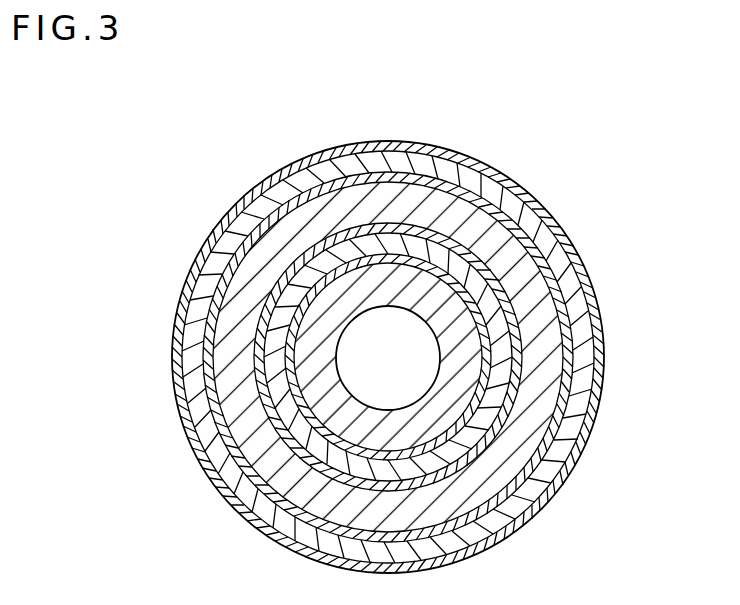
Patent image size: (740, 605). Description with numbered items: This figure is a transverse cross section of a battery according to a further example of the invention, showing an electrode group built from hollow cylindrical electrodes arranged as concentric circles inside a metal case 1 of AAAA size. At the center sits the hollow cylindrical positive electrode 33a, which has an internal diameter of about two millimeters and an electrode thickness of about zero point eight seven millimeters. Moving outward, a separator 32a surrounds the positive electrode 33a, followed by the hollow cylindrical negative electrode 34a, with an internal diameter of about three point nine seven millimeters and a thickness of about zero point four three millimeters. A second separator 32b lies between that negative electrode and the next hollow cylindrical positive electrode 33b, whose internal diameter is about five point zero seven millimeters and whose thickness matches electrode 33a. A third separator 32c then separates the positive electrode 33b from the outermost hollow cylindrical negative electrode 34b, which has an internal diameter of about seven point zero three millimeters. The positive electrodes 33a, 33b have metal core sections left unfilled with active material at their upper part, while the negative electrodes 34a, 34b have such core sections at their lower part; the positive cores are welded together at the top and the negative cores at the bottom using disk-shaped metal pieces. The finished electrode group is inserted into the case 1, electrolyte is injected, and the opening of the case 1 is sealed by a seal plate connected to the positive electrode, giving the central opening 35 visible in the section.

The metal case 1 is at (547, 208).
The separator 32a is at (420, 262).
The separator 32b is at (540, 268).
The separator 32c is at (207, 420).
The hollow cylindrical positive electrode 33a is at (470, 370).
The hollow cylindrical positive electrode 33b is at (522, 453).
The hollow cylindrical negative electrode 34a is at (283, 297).
The hollow cylindrical negative electrode 34b is at (320, 187).
The central bore 35 is at (405, 350).